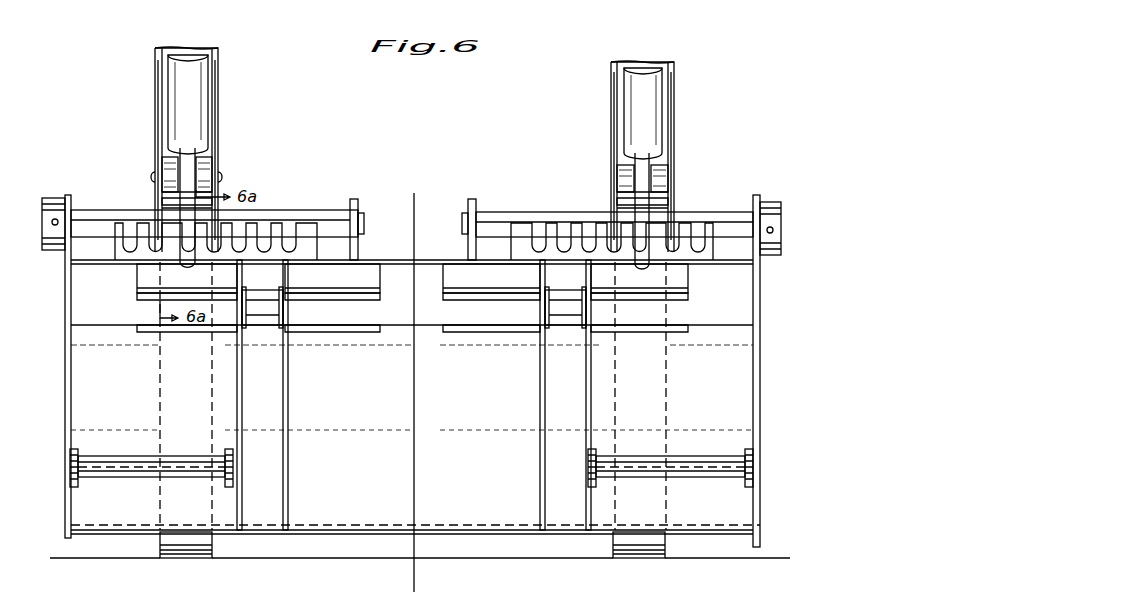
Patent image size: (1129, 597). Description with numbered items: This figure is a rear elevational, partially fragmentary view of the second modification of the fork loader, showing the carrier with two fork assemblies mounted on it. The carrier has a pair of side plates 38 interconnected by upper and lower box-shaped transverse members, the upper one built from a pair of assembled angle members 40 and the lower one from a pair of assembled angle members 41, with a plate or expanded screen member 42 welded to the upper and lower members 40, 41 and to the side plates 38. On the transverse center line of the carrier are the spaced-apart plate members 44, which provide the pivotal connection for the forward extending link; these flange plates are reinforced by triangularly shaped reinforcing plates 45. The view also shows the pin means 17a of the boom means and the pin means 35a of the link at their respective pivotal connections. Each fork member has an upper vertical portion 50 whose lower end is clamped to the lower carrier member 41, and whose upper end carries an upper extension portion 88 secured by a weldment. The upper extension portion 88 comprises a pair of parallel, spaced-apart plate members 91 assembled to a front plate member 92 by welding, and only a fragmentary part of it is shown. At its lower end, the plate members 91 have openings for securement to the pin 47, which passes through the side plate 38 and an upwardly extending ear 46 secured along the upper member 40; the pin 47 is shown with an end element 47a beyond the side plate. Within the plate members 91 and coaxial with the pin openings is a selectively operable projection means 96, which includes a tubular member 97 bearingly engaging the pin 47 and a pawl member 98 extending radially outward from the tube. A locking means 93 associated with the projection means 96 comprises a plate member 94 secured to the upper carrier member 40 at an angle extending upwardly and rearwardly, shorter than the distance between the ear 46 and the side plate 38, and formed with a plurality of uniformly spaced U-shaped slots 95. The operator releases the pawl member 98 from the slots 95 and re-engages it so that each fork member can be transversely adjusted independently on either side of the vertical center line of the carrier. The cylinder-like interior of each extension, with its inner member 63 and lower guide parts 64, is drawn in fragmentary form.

The pin means 17a is at (118, 478).
The pin means 35a is at (260, 328).
The side plate 38 is at (65, 401).
The upper angle members 40 is at (418, 270).
The lower angle members 41 is at (360, 535).
The plate or expanded screen member 42 is at (458, 401).
The spaced-apart plate members 44 is at (237, 410).
The reinforcing plates 45 is at (140, 298).
The ear 46 is at (355, 198).
The pin 47 is at (92, 209).
The knob 47a is at (50, 197).
The upper vertical fork portion 50 is at (172, 560).
The piston 63 is at (210, 101).
The guide collar 64 is at (222, 180).
The upper extension portion 88 is at (220, 63).
The plate members 91 is at (156, 100).
The front plate member 92 is at (180, 48).
The locking means 93 is at (176, 260).
The plate member 94 is at (306, 262).
The U-shaped slots 95 is at (264, 246).
The selectively operable projection means 96 is at (218, 204).
The tubular member 97 is at (164, 203).
The pawl member 98 is at (188, 266).